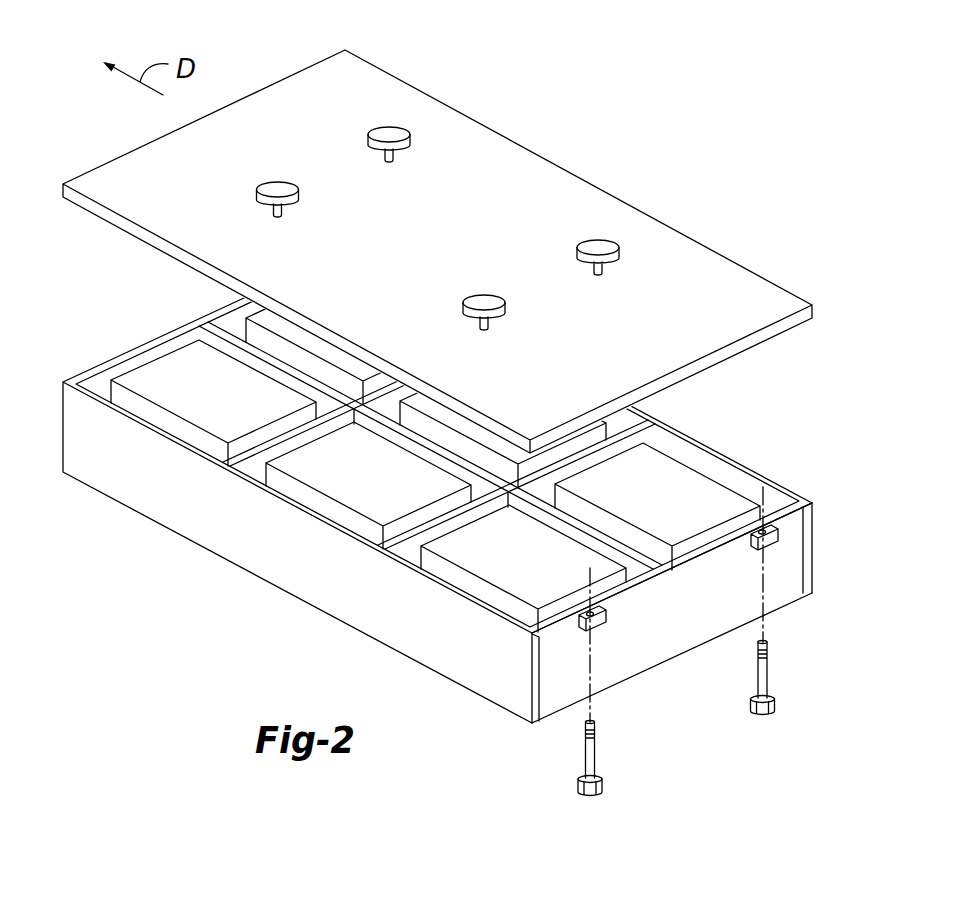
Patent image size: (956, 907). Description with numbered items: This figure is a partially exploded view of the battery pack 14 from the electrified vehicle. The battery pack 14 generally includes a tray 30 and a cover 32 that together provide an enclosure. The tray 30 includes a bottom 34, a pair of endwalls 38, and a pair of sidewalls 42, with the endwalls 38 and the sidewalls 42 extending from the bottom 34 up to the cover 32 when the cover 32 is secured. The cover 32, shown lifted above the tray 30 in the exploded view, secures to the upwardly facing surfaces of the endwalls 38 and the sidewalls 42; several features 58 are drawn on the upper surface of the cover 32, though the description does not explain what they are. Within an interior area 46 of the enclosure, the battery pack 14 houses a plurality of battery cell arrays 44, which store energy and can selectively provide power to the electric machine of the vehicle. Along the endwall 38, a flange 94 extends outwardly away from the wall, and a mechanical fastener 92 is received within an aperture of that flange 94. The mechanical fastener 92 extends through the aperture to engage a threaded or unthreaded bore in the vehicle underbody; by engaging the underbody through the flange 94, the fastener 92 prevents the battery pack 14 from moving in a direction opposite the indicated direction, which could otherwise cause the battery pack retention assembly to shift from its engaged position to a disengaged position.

The battery pack 14 is at (709, 162).
The tray 30 is at (826, 489).
The cover 32 is at (760, 262).
The bottom 34 is at (710, 640).
The endwall 38 is at (790, 561).
The sidewall 42 is at (297, 571).
The battery cell array 44 is at (692, 500).
The interior area 46 is at (648, 428).
The fastener knob 58 is at (389, 137).
The mechanical fastener 92 is at (587, 767).
The flange 94 is at (606, 619).